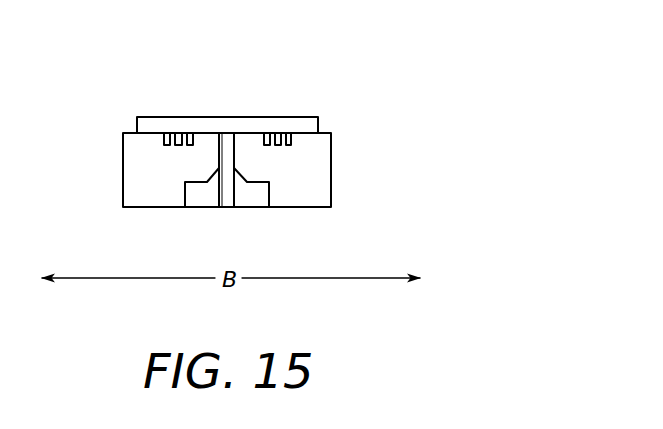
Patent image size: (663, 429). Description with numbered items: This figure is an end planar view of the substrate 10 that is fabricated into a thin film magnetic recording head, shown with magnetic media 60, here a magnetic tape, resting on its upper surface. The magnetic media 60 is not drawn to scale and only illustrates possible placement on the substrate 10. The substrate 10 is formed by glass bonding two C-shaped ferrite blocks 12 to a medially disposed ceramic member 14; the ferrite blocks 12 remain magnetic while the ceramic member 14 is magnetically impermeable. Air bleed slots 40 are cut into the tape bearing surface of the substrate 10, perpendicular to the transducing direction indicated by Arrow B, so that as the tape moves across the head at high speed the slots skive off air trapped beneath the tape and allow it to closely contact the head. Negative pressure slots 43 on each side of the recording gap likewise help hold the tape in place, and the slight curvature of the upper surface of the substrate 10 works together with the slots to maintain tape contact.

The substrate 10 is at (412, 88).
The C-shaped ferrite block 12 is at (137, 193).
The ceramic member 14 is at (228, 193).
The air bleed slot 40 is at (167, 153).
The negative pressure slot 43 is at (165, 138).
The magnetic media 60 is at (260, 117).